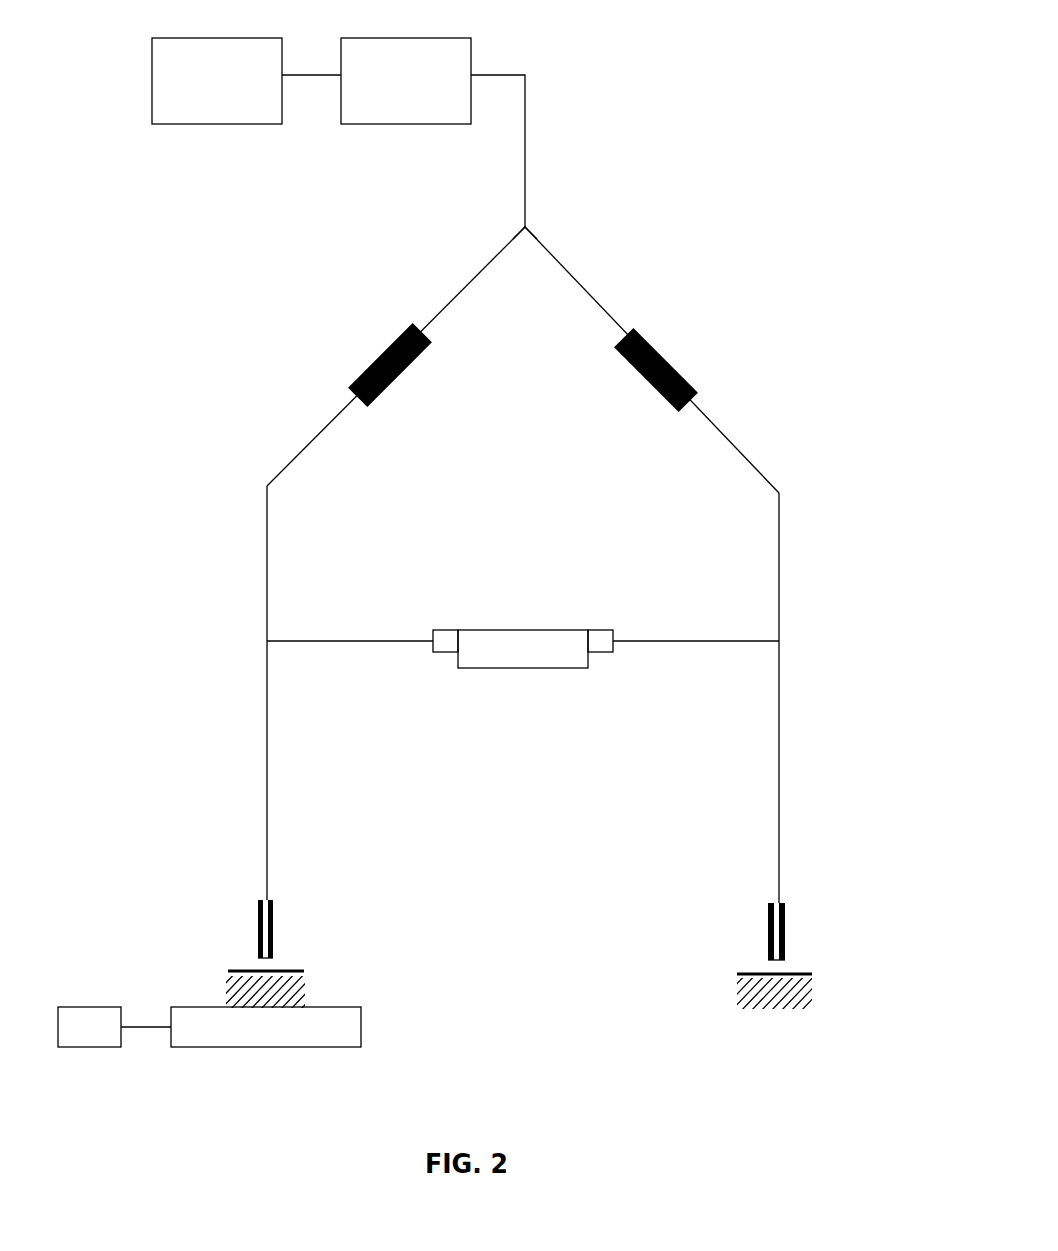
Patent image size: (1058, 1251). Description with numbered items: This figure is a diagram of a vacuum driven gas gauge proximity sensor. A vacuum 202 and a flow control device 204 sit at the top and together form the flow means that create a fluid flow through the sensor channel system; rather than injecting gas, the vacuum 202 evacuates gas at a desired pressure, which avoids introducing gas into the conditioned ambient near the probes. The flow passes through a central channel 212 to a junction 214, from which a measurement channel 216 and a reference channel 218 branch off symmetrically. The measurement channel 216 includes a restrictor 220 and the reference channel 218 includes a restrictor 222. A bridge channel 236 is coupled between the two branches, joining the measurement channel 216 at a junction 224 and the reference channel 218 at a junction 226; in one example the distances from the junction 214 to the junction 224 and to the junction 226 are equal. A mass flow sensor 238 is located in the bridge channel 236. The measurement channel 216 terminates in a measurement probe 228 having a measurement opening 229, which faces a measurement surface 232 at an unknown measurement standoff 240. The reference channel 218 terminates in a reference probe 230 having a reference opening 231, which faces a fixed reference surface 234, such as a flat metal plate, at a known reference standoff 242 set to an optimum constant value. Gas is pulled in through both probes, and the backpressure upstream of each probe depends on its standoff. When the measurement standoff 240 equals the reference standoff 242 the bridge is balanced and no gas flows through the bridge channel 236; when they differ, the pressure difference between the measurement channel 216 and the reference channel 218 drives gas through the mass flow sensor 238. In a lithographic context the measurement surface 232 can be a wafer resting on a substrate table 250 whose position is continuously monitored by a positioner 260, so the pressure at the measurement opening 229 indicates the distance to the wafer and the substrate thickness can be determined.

The vacuum 202 is at (247, 22).
The flow control device 204 is at (405, 37).
The central channel 212 is at (526, 126).
The junction 214 is at (526, 224).
The measurement channel 216 is at (440, 309).
The reference channel 218 is at (597, 309).
The restrictor 220 is at (418, 363).
The restrictor 222 is at (678, 369).
The junction 224 is at (284, 641).
The junction 226 is at (780, 641).
The bridge channel 236 is at (347, 641).
The mass flow sensor 238 is at (517, 630).
The measurement probe 228 is at (274, 913).
The measurement opening 229 is at (258, 957).
The measurement standoff 240 is at (267, 968).
The measurement surface 232 is at (305, 991).
The substrate table 250 is at (361, 1023).
The positioner 260 is at (98, 1006).
The reference probe 230 is at (786, 914).
The reference opening 231 is at (768, 958).
The reference standoff 242 is at (770, 969).
The reference surface 234 is at (808, 991).